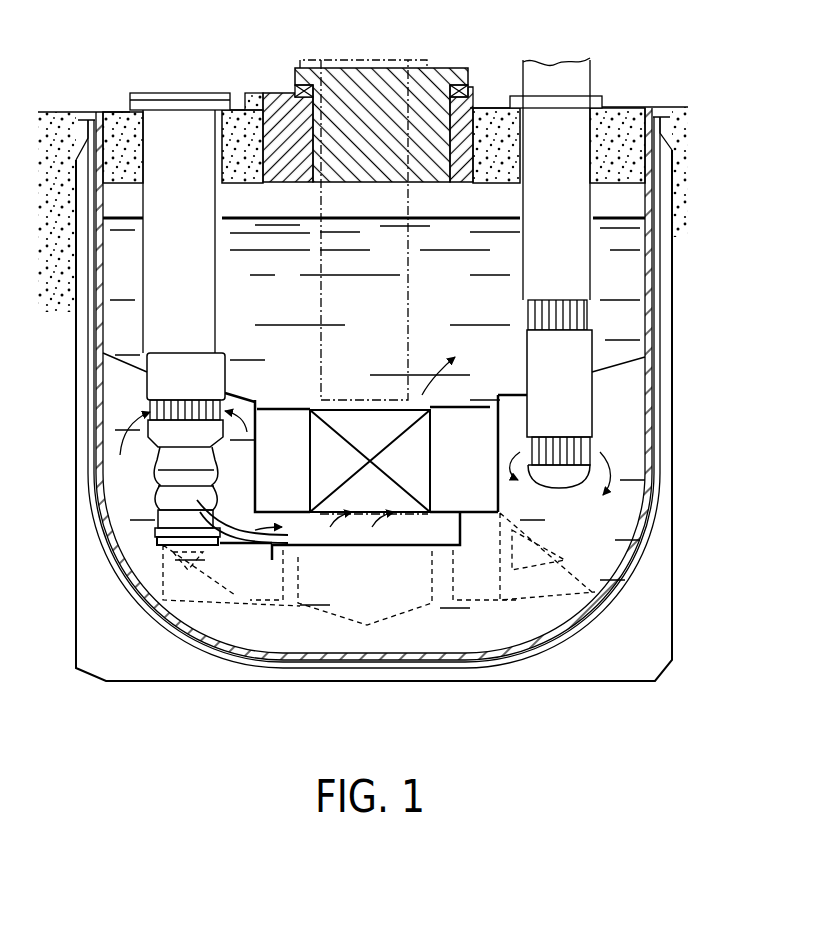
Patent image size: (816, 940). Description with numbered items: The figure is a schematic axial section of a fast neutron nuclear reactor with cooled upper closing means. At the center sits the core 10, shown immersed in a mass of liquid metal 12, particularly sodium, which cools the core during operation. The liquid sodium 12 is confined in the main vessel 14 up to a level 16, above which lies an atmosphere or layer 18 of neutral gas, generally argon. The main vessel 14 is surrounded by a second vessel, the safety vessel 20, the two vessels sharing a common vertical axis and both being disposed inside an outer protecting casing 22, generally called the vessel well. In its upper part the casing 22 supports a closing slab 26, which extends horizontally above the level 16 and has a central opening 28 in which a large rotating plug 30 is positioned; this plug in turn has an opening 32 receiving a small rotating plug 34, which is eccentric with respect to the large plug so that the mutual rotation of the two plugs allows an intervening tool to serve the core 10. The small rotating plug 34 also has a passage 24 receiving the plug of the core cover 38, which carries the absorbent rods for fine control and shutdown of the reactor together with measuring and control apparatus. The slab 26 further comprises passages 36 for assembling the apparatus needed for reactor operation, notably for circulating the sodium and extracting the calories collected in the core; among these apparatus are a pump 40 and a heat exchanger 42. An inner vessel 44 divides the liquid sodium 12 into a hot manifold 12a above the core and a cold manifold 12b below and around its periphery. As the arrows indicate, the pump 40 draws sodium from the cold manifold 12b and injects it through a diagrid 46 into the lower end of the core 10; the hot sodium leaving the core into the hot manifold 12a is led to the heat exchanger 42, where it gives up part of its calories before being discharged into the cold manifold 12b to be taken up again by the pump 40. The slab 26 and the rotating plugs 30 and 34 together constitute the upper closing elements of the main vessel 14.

The core 10 is at (420, 472).
The liquid metal 12 is at (460, 311).
The hot manifold 12a is at (282, 377).
The cold manifold 12b is at (580, 549).
The main vessel 14 is at (95, 437).
The level 16 is at (258, 218).
The layer of neutral gas 18 is at (462, 213).
The safety vessel 20 is at (90, 515).
The outer protecting casing 22 is at (70, 399).
The passage 24 is at (395, 92).
The closing slab 26 is at (107, 112).
The central opening 28 is at (263, 110).
The large rotating plug 30 is at (285, 118).
The opening 32 is at (326, 105).
The small rotating plug 34 is at (432, 102).
The passages 36 is at (153, 132).
The core cover plug 38 is at (322, 288).
The pump 40 is at (197, 486).
The heat exchanger 42 is at (565, 394).
The inner vessel 44 is at (628, 370).
The diagrid 46 is at (390, 548).